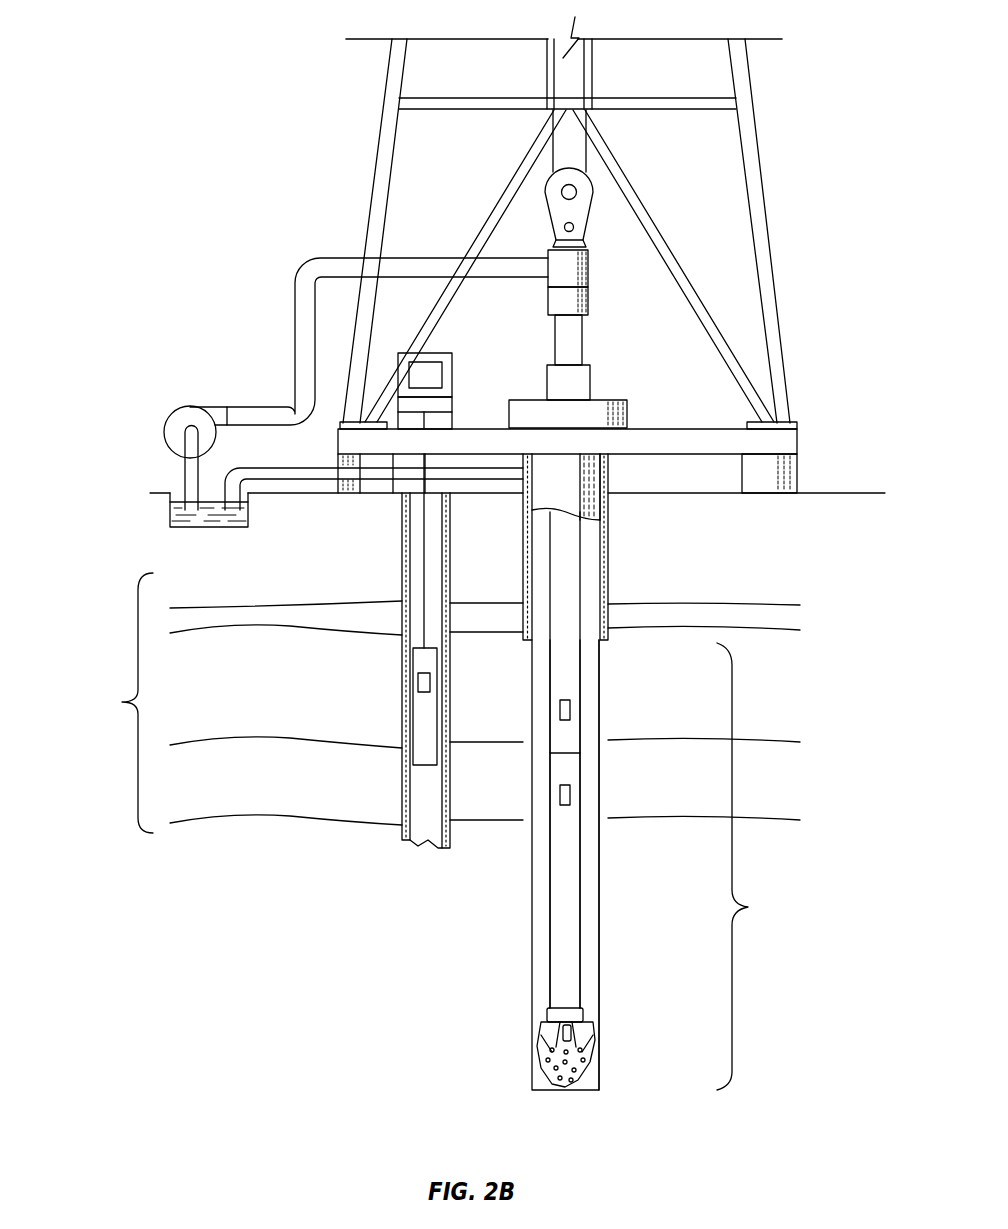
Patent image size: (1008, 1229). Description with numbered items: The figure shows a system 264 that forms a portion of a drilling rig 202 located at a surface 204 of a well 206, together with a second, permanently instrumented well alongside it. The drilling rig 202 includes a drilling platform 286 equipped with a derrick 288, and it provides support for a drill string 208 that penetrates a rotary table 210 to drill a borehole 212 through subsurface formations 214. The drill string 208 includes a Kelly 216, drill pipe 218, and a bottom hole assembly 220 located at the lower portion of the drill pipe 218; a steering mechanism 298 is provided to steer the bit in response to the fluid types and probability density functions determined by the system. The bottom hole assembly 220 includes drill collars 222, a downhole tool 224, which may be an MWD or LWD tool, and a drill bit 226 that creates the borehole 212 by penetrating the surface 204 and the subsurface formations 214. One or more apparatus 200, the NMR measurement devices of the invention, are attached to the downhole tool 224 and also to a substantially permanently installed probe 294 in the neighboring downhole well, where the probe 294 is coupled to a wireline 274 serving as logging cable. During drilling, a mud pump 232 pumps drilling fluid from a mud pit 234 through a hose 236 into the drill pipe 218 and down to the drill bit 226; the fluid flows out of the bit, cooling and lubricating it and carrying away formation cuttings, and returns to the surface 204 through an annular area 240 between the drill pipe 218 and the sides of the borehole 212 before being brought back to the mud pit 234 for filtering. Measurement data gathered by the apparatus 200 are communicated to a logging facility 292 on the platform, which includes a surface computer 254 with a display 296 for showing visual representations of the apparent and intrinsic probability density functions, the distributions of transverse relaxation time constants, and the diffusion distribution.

The system 264 is at (230, 157).
The drilling rig 202 is at (772, 199).
The derrick 288 is at (758, 130).
The Kelly 216 is at (585, 340).
The steering mechanism 298 is at (592, 378).
The rotary table 210 is at (627, 413).
The drilling platform 286 is at (797, 437).
The logging facility 292 is at (436, 351).
The surface computer 254 is at (452, 357).
The display 296 is at (442, 380).
The hose 236 is at (295, 320).
The mud pump 232 is at (190, 405).
The mud pit 234 is at (170, 493).
The surface 204 is at (822, 493).
The well 206 is at (616, 491).
The borehole 212 is at (600, 563).
The drill string 208 is at (586, 598).
The drill collars 222 is at (613, 640).
The drill pipe 218 is at (568, 663).
The annular area 240 is at (590, 695).
The downhole tool 224 is at (568, 770).
The apparatus 200 is at (418, 683).
The drill bit 226 is at (587, 1048).
The bottom hole assembly 220 is at (755, 866).
The subsurface formations 214 is at (438, 703).
The wireline 274 is at (420, 562).
The permanently installed probe 294 is at (413, 728).